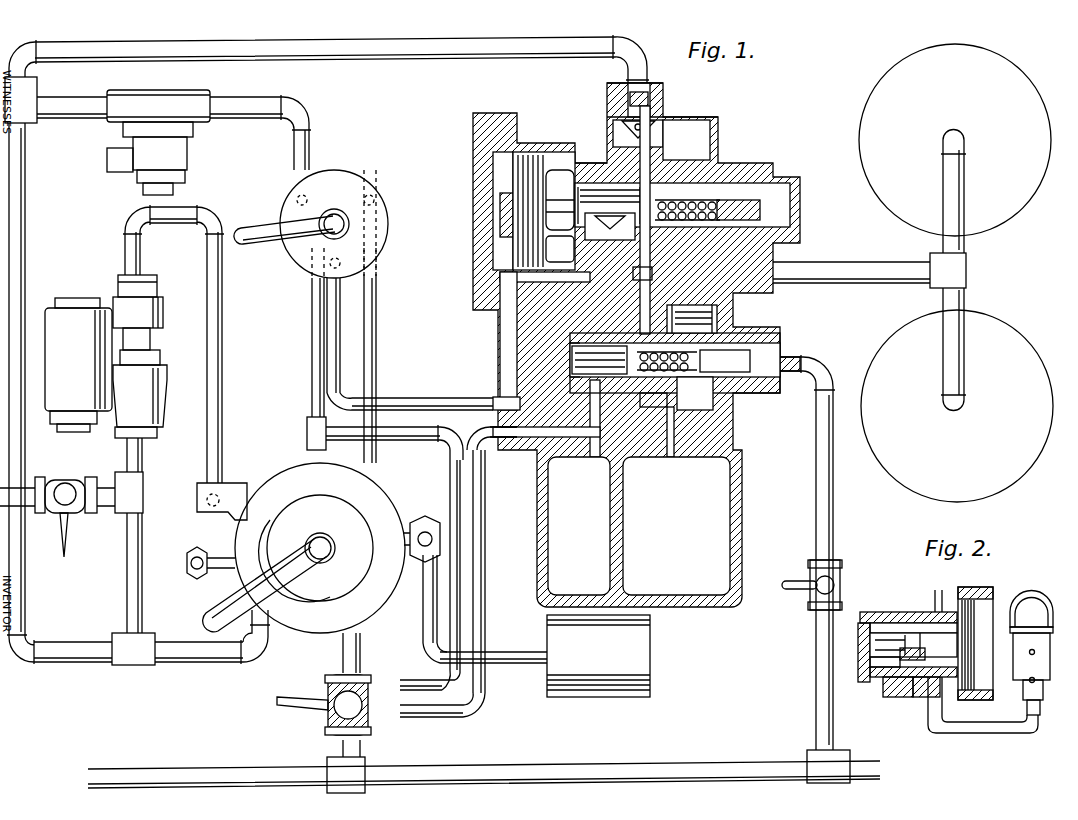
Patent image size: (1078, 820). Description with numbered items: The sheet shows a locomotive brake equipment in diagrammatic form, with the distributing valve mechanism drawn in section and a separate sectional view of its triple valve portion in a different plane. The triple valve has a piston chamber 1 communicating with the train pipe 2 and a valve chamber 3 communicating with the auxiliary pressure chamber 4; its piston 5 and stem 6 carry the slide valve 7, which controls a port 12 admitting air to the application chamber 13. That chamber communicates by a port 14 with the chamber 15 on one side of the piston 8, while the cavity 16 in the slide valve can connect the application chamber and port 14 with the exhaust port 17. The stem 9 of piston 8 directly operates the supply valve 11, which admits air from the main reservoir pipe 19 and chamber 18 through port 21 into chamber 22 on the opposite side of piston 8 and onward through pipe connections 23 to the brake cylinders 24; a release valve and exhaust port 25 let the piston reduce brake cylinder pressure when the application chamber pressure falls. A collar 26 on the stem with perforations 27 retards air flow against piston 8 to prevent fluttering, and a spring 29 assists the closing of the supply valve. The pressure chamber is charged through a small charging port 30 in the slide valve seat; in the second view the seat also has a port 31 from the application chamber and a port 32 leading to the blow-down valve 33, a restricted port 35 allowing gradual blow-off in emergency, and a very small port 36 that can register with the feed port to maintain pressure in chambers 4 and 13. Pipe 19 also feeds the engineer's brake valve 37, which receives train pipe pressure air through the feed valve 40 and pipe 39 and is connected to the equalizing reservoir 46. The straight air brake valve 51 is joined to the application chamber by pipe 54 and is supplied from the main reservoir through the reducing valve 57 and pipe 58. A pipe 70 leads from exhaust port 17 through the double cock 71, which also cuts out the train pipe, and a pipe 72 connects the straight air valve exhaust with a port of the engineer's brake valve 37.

In FIG. 1, the piston chamber 1 is at (738, 333).
In FIG. 1, the train pipe 2 is at (833, 514).
In FIG. 1, the valve chamber 3 is at (376, 340).
In FIG. 2, the valve chamber 3 is at (888, 618).
In FIG. 1, the auxiliary pressure chamber 4 is at (715, 498).
In FIG. 1, the piston 5 is at (682, 396).
In FIG. 2, the piston 5 is at (975, 672).
In FIG. 1, the stem 6 is at (572, 350).
In FIG. 2, the stem 6 is at (870, 641).
In FIG. 1, the slide valve 7 is at (572, 372).
In FIG. 2, the slide valve 7 is at (870, 668).
In FIG. 1, the piston 8 is at (533, 152).
In FIG. 1, the stem 9 is at (603, 162).
In FIG. 1, the supply valve 11 is at (660, 140).
In FIG. 1, the port 12 is at (596, 445).
In FIG. 1, the application chamber 13 is at (565, 499).
In FIG. 1, the port 14 is at (498, 348).
In FIG. 1, the chamber 15 is at (493, 242).
In FIG. 1, the cavity 16 is at (599, 360).
In FIG. 1, the exhaust port 17 is at (512, 440).
In FIG. 1, the chamber 18 is at (700, 138).
In FIG. 1, the main reservoir pipe 19 is at (410, 56).
In FIG. 1, the port 21 is at (651, 220).
In FIG. 1, the chamber 22 is at (750, 177).
In FIG. 1, the pipe connections 23 is at (795, 280).
In FIG. 1, the brake cylinders 24 is at (883, 196).
In FIG. 1, the exhaust port 25 is at (610, 240).
In FIG. 1, the collar 26 is at (574, 226).
In FIG. 1, the perforations 27 is at (560, 200).
In FIG. 1, the spring 29 is at (738, 218).
In FIG. 2, the charging port 30 is at (910, 650).
In FIG. 2, the port 31 is at (893, 697).
In FIG. 2, the port 32 is at (918, 697).
In FIG. 2, the blow-down valve 33 is at (1030, 683).
In FIG. 2, the restricted port 35 is at (870, 680).
In FIG. 1, the small port 36 is at (651, 405).
In FIG. 1, the engineer's brake valve 37 is at (298, 484).
In FIG. 1, the pipe 39 is at (222, 356).
In FIG. 1, the feed valve 40 is at (113, 312).
In FIG. 1, the equalizing reservoir 46 is at (547, 636).
In FIG. 1, the straight air brake valve 51 is at (348, 186).
In FIG. 1, the pipe 54 is at (343, 380).
In FIG. 1, the reducing valve 57 is at (187, 151).
In FIG. 1, the pipe 58 is at (294, 137).
In FIG. 1, the pipe 70 is at (450, 490).
In FIG. 1, the double cock 71 is at (327, 716).
In FIG. 1, the pipe 72 is at (312, 336).